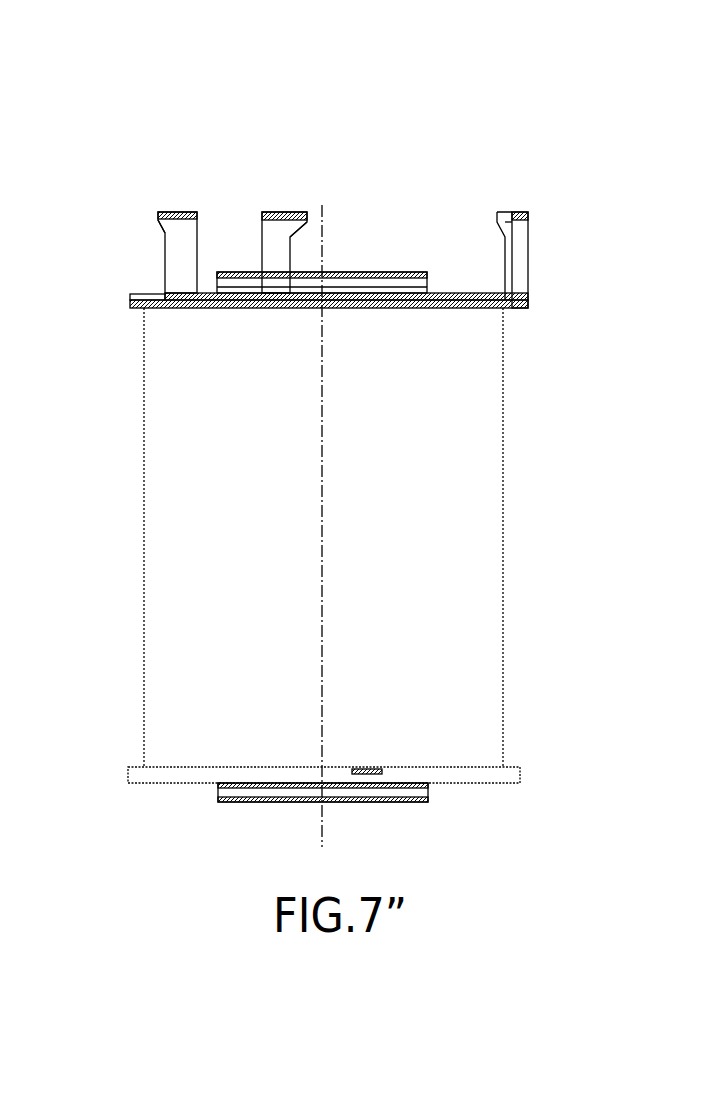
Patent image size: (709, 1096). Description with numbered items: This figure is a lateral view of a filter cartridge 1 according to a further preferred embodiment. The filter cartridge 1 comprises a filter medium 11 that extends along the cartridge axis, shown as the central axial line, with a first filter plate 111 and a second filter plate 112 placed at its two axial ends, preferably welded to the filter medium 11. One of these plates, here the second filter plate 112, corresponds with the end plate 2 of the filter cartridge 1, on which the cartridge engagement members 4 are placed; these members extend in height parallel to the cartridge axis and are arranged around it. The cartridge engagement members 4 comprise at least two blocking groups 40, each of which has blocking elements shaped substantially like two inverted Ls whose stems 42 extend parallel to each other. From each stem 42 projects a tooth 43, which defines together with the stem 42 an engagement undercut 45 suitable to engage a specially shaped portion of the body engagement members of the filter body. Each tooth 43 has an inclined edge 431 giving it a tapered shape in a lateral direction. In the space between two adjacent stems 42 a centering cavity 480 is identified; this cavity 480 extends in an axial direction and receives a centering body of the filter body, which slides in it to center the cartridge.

The filter cartridge 1 is at (352, 446).
The filter medium 11 is at (178, 503).
The first filter plate 111 is at (526, 777).
The second filter plate 112 is at (20, 354).
The end plate 2 is at (534, 305).
The cartridge engagement members 4 is at (328, 176).
The blocking group 40 is at (214, 182).
The stem 42 is at (178, 238).
The tooth 43 is at (503, 206).
The inclined edge 431 is at (300, 231).
The engagement undercut 45 is at (156, 229).
The cavity 480 is at (233, 235).